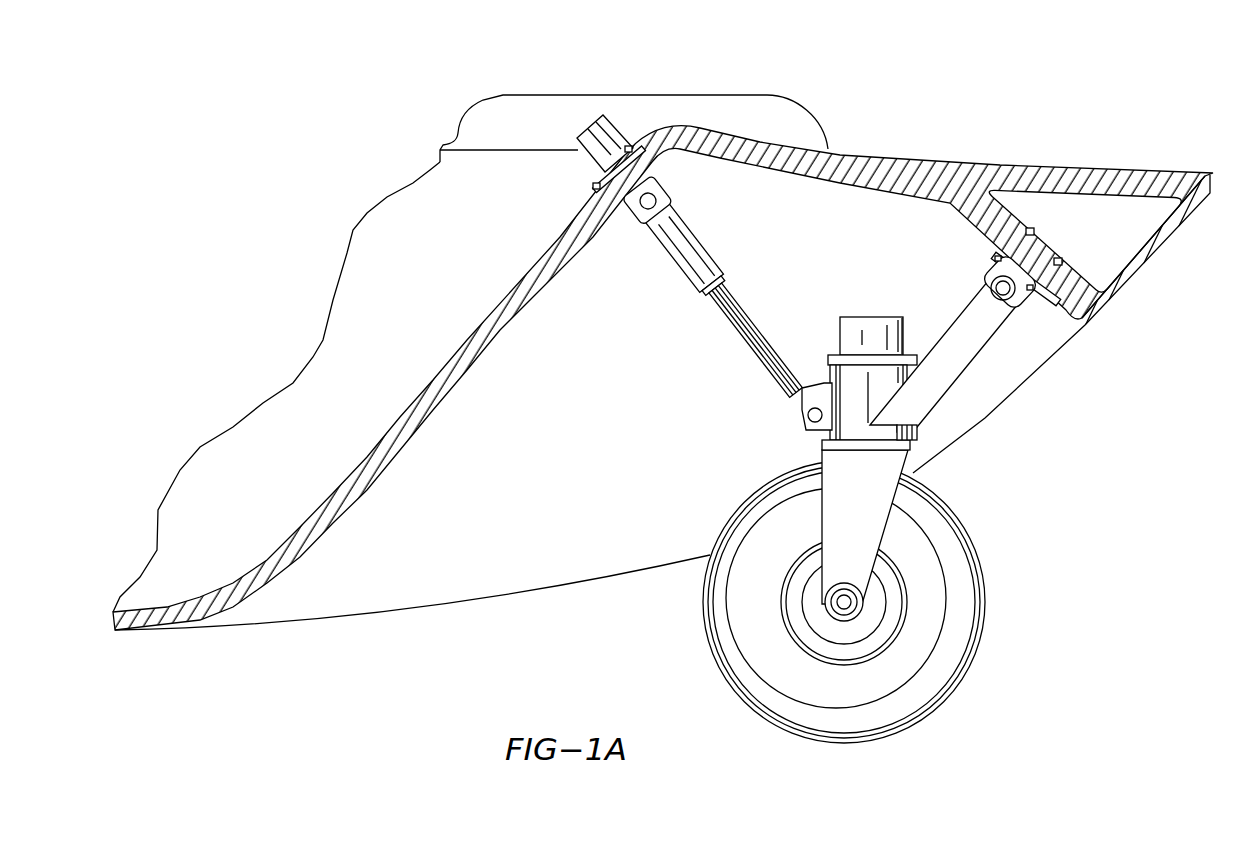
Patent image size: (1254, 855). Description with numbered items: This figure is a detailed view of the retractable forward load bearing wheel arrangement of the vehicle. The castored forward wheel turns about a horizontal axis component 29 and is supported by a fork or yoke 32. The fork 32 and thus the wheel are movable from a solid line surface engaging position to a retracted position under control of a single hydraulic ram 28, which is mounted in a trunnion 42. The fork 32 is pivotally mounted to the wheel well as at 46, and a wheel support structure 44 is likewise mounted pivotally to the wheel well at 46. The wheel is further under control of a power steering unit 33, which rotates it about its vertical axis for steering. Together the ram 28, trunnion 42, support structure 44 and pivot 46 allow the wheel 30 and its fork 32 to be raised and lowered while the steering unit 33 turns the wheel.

The hydraulic ram 28 is at (606, 126).
The trunnion 42 is at (630, 207).
The pivot mounting 46 is at (995, 273).
The wheel support structure 44 is at (980, 333).
The power steering unit 33 is at (917, 434).
The wheel 30 is at (808, 592).
The fork or yoke 32 is at (877, 535).
The horizontal axis component 29 is at (847, 603).